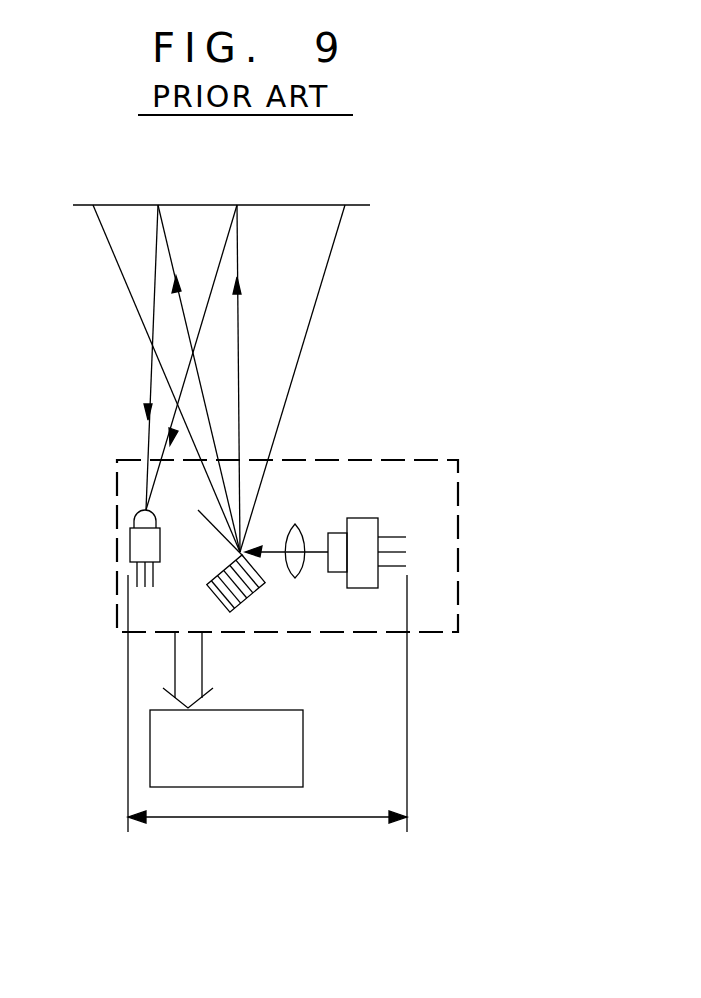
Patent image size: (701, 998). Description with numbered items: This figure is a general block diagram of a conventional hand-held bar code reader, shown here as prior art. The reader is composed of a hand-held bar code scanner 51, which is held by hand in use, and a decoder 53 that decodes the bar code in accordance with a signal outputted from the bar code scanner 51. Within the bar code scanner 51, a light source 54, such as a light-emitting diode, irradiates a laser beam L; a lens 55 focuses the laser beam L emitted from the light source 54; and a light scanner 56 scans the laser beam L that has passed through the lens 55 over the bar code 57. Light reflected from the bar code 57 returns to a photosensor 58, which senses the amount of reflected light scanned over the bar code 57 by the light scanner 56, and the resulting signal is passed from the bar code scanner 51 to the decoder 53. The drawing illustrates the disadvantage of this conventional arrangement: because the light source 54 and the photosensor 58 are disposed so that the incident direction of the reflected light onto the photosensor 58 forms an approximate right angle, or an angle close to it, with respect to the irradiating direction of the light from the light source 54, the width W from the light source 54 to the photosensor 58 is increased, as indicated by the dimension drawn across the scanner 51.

The hand-held bar code scanner 51 is at (468, 514).
The decoder 53 is at (303, 752).
The light source 54 is at (370, 518).
The lens 55 is at (303, 528).
The light scanner 56 is at (239, 598).
The bar code 57 is at (188, 205).
The photosensor 58 is at (155, 543).
The laser beam L is at (198, 370).
The width W is at (267, 714).